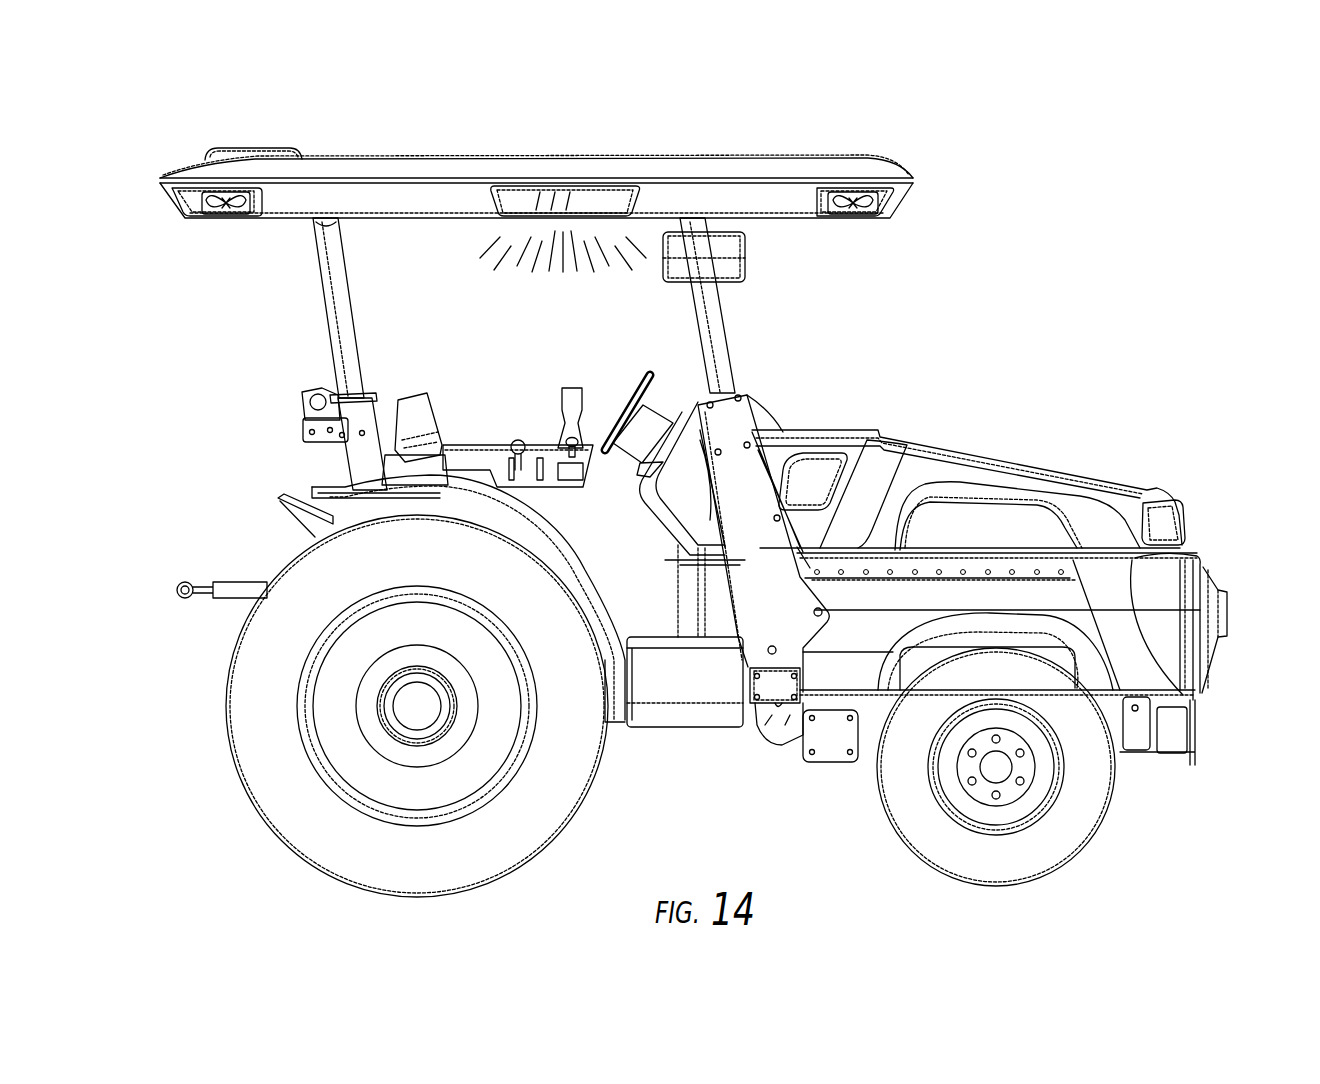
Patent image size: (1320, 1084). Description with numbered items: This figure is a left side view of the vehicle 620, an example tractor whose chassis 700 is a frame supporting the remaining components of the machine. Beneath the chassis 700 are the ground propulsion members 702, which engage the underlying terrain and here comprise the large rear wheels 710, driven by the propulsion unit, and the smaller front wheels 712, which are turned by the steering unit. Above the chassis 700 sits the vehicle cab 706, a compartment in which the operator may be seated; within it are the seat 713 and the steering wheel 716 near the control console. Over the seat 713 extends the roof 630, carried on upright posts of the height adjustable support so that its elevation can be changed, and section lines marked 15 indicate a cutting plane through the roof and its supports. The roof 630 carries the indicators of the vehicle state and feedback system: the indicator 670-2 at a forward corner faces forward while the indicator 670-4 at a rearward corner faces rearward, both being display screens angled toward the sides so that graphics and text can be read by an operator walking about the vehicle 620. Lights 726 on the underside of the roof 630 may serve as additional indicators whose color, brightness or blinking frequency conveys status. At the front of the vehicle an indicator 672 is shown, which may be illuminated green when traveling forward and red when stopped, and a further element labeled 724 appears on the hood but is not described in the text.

The vehicle 620 is at (519, 159).
The roof 630 is at (262, 148).
The indicator 670-2 is at (872, 200).
The indicator 670-4 is at (205, 201).
The lights 726 is at (612, 185).
The vehicle cab 706 is at (242, 339).
The chassis 700 is at (835, 690).
The ground propulsion members 702 is at (279, 825).
The seat 713 is at (432, 415).
The steering wheel 716 is at (648, 378).
The headlight 724 is at (1187, 520).
The indicator 672 is at (1183, 695).
The rear wheels 710 is at (340, 885).
The front wheels 712 is at (1075, 855).
The section line 15 is at (300, 318).